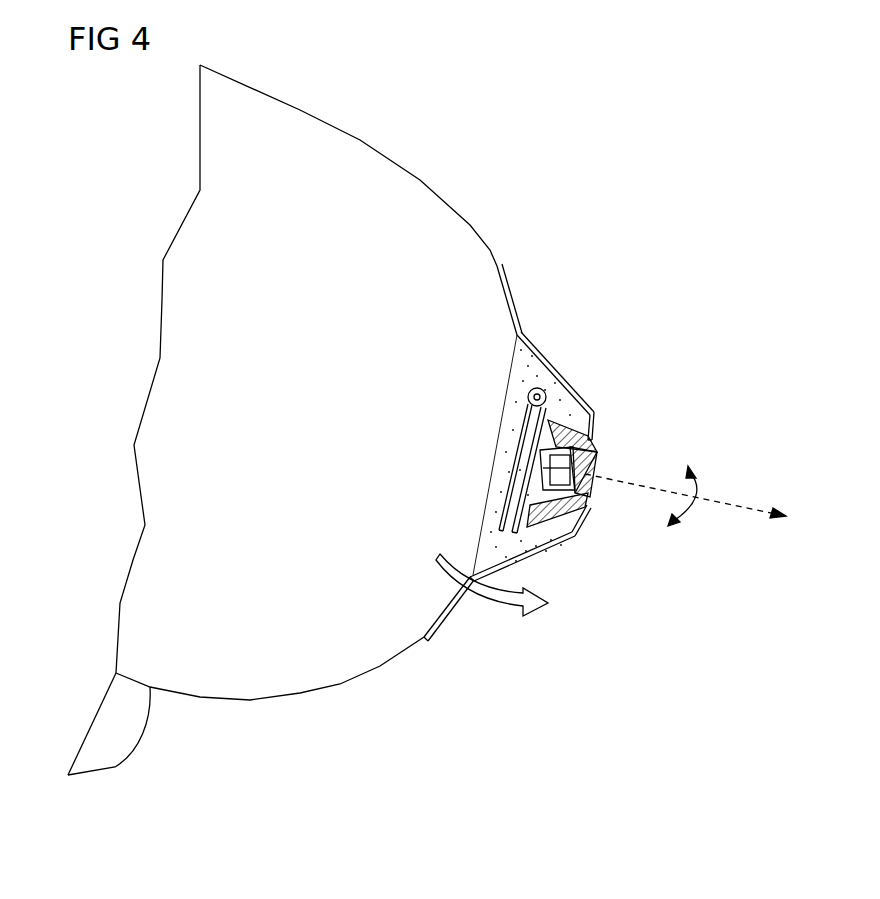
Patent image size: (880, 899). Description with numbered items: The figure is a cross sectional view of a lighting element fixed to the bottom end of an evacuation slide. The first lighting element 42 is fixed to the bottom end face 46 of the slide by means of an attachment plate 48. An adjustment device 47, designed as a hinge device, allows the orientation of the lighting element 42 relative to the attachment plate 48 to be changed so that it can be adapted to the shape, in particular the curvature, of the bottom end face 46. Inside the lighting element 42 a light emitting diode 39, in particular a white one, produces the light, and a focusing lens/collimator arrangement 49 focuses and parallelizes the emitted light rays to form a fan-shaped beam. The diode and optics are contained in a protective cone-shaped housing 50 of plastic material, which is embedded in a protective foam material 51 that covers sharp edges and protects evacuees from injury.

The light emitting diode 39 is at (590, 458).
The first lighting element 42 is at (675, 395).
The bottom end face 46 is at (490, 252).
The adjustment device 47 is at (516, 403).
The attachment plate 48 is at (490, 494).
The focusing lens/collimator arrangement 49 is at (602, 496).
The protective cone-shaped housing 50 is at (576, 420).
The protective foam material 51 is at (546, 362).